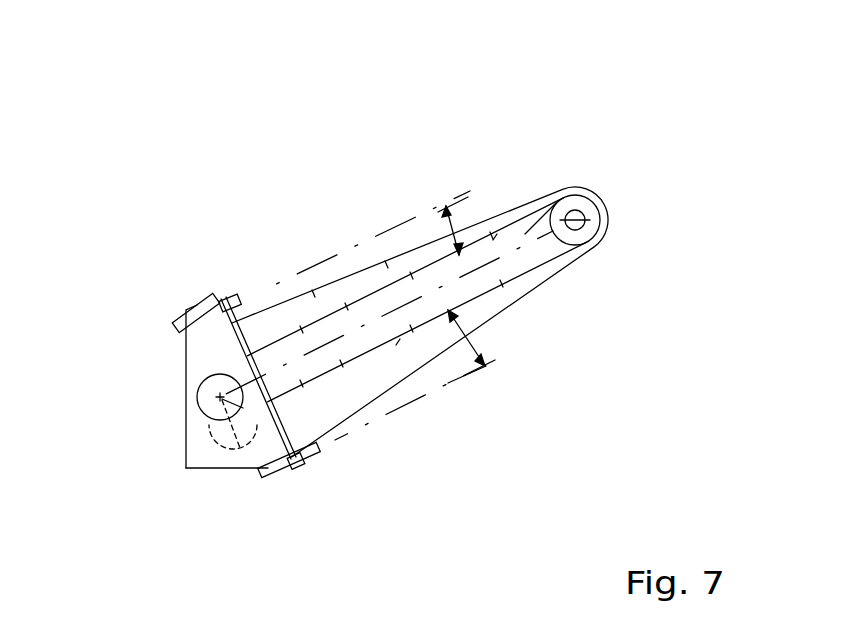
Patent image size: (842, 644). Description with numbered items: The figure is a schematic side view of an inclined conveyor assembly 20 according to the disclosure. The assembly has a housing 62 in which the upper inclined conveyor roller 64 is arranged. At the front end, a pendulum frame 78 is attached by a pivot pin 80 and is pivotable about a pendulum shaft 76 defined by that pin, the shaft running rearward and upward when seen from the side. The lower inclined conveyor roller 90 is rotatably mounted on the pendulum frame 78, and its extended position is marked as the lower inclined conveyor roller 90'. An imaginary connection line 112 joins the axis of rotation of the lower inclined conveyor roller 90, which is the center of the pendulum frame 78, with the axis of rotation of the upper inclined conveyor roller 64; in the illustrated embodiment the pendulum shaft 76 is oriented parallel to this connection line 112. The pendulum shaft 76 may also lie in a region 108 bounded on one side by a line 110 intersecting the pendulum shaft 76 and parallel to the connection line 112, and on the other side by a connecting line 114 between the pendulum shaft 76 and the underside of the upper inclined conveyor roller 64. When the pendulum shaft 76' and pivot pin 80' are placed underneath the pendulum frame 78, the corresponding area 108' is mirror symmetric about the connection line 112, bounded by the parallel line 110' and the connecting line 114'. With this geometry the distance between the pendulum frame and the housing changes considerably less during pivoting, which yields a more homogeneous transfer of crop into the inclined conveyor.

The inclined conveyor assembly 20 is at (277, 267).
The housing 62 is at (387, 260).
The upper inclined conveyor roller 64 is at (518, 208).
The pendulum shaft 76 is at (148, 294).
The pivot pin 80 is at (148, 294).
The pendulum shaft 76' is at (316, 496).
The pivot pin 80' is at (316, 496).
The pendulum frame 78 is at (218, 468).
The lower inclined conveyor roller 90 is at (175, 407).
The lower inclined conveyor roller 90' is at (172, 456).
The region 108 is at (425, 160).
The area 108' is at (529, 366).
The line 110 is at (371, 210).
The parallel line 110' is at (443, 404).
The connection line 112 is at (330, 343).
The connecting line 114 is at (471, 168).
The connecting line 114' is at (440, 402).